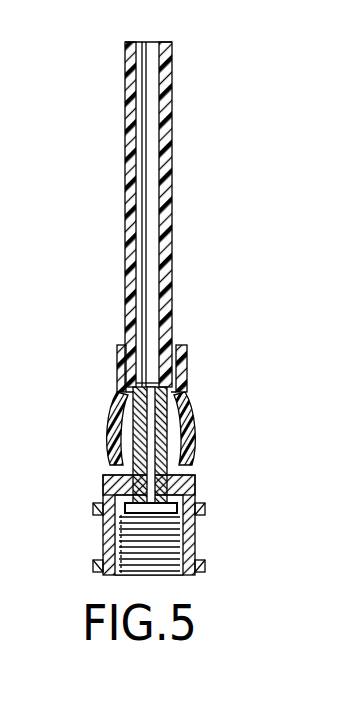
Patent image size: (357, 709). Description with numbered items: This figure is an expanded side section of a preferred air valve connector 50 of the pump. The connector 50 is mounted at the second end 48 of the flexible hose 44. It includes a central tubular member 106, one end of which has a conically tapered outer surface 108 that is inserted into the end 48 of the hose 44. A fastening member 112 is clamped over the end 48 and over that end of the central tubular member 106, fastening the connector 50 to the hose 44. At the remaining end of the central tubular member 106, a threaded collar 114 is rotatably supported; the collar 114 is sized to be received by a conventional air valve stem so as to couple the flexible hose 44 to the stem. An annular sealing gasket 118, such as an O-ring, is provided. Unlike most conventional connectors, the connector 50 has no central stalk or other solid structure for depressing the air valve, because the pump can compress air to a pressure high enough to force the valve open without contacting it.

The flexible hose 44 is at (175, 78).
The second end of the flexible hose 48 is at (164, 326).
The air valve connector 50 is at (214, 507).
The central tubular member 106 is at (188, 465).
The conically tapered outer surface 108 is at (180, 381).
The fastening member 112 is at (120, 393).
The threaded collar 114 is at (103, 475).
The annular sealing gasket 118 is at (125, 507).